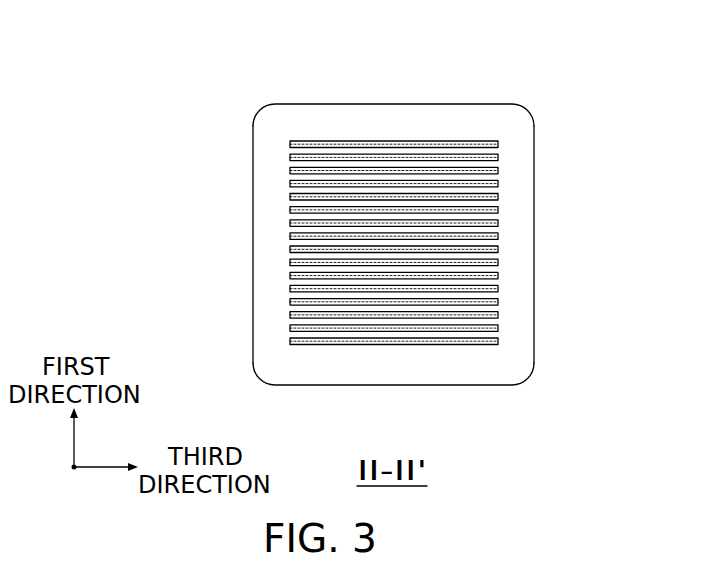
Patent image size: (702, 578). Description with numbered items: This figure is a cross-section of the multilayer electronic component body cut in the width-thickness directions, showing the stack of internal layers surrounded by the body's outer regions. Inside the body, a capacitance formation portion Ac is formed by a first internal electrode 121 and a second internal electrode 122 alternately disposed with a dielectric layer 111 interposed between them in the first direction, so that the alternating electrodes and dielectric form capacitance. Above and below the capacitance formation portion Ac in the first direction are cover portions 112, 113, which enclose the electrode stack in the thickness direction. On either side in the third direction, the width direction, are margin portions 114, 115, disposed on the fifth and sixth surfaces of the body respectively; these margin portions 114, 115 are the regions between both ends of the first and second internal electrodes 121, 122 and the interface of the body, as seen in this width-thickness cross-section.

The dielectric layer 111 is at (322, 178).
The cover portion 112 is at (372, 117).
The cover portion 113 is at (397, 370).
The margin portion 114 is at (266, 246).
The margin portion 115 is at (527, 247).
The first internal electrode 121 is at (422, 143).
The second internal electrode 122 is at (478, 157).
The capacitance formation portion Ac is at (514, 214).